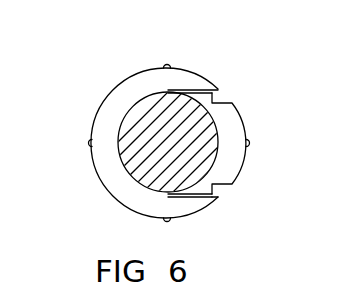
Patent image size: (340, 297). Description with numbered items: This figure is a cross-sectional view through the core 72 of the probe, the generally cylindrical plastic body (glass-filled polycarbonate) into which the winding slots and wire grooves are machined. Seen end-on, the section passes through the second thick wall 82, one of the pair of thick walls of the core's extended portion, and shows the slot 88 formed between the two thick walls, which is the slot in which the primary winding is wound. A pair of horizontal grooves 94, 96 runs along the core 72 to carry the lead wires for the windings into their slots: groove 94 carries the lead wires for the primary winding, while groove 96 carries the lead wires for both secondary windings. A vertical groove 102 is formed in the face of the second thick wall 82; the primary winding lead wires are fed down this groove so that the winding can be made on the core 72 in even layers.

The core 72 is at (93, 95).
The second thick wall 82 is at (242, 120).
The slot 88 is at (214, 153).
The horizontal groove 96 is at (216, 97).
The horizontal groove 94 is at (216, 192).
The vertical groove 102 is at (194, 195).